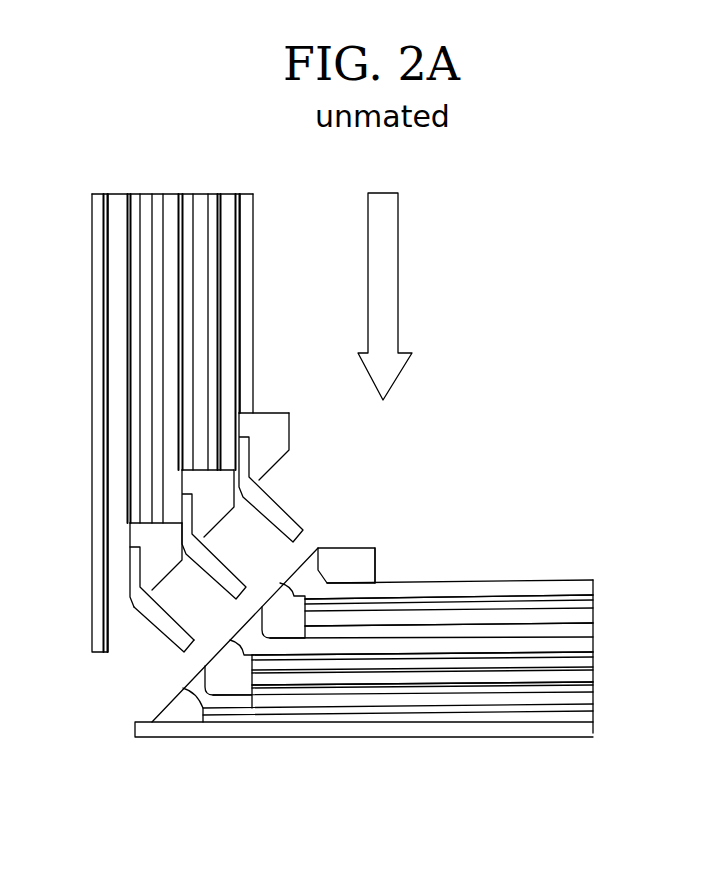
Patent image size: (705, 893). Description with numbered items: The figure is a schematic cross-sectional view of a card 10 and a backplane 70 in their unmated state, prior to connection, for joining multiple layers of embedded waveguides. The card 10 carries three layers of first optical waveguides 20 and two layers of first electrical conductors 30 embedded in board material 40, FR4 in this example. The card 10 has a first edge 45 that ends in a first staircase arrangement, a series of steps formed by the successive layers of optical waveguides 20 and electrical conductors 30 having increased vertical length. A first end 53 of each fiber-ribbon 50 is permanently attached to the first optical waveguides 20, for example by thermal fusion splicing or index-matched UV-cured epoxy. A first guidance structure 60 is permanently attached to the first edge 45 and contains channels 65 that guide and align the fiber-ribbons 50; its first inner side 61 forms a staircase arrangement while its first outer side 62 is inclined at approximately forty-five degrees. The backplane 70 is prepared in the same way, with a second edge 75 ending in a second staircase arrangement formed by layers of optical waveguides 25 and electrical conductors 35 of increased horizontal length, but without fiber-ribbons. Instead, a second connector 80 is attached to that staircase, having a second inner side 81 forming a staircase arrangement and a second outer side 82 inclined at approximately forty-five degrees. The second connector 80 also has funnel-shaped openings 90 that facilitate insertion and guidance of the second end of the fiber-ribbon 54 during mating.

The card 10 is at (68, 147).
The first optical waveguides 20 is at (113, 193).
The first electrical conductors 30 is at (142, 193).
The board material 40 is at (245, 193).
The first edge 45 is at (203, 470).
The fiber-ribbon 50 is at (278, 503).
The first end 53 is at (143, 558).
The second end of the fiber-ribbon 54 is at (152, 615).
The first guidance structure 60 is at (290, 422).
The first inner side 61 is at (271, 413).
The first outer side 62 is at (284, 461).
The channels 65 is at (153, 540).
The backplane 70 is at (568, 767).
The second edge 75 is at (380, 556).
The second connector 80 is at (375, 548).
The second inner side 81 is at (377, 558).
The second outer side 82 is at (268, 590).
The funnel-shaped openings 90 is at (188, 683).
The optical waveguides 25 is at (593, 600).
The electrical conductors 35 is at (593, 627).